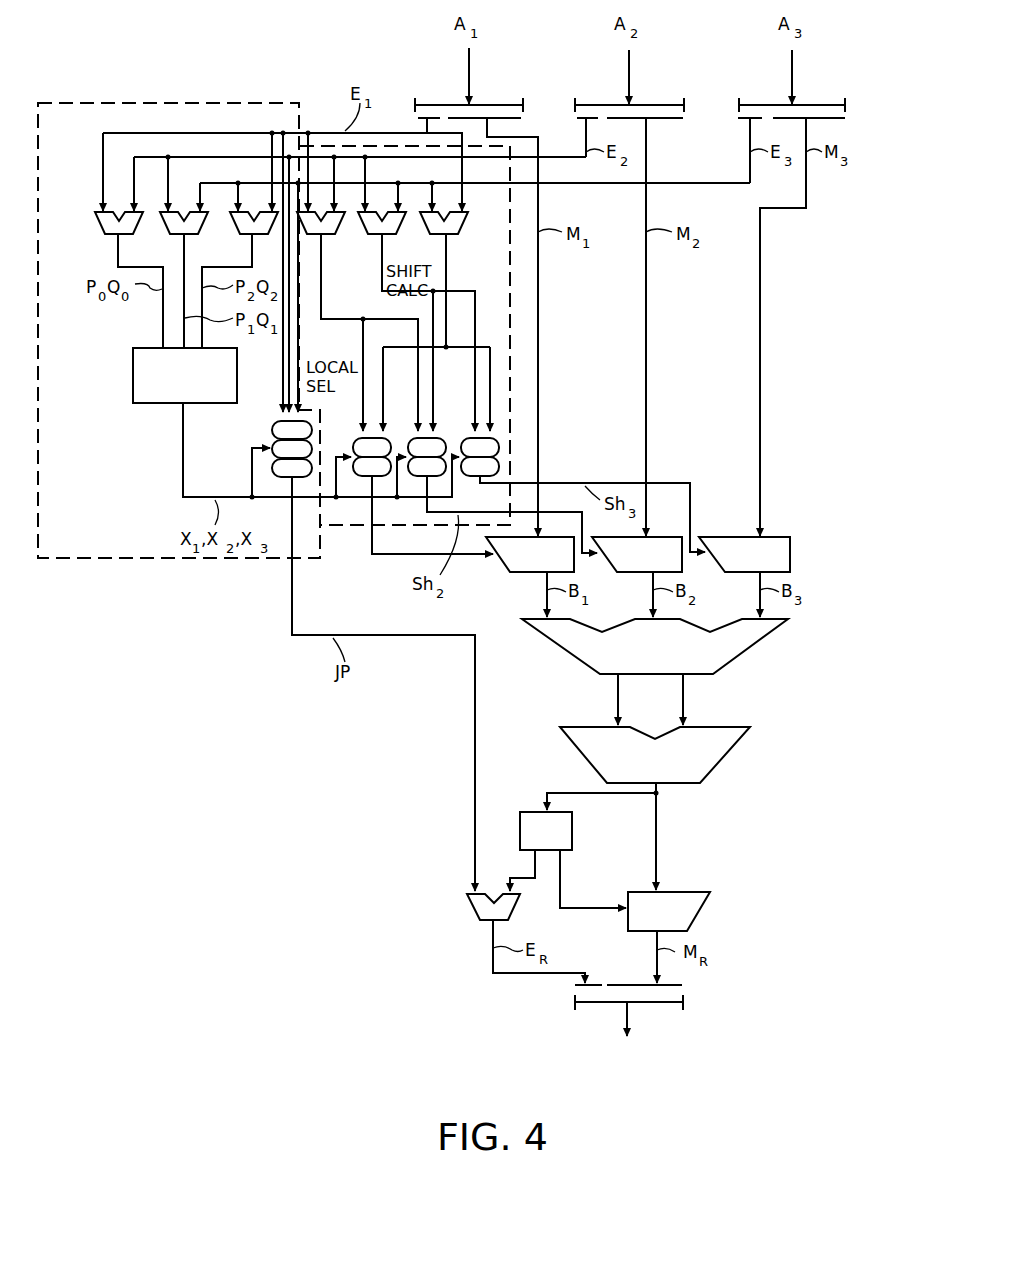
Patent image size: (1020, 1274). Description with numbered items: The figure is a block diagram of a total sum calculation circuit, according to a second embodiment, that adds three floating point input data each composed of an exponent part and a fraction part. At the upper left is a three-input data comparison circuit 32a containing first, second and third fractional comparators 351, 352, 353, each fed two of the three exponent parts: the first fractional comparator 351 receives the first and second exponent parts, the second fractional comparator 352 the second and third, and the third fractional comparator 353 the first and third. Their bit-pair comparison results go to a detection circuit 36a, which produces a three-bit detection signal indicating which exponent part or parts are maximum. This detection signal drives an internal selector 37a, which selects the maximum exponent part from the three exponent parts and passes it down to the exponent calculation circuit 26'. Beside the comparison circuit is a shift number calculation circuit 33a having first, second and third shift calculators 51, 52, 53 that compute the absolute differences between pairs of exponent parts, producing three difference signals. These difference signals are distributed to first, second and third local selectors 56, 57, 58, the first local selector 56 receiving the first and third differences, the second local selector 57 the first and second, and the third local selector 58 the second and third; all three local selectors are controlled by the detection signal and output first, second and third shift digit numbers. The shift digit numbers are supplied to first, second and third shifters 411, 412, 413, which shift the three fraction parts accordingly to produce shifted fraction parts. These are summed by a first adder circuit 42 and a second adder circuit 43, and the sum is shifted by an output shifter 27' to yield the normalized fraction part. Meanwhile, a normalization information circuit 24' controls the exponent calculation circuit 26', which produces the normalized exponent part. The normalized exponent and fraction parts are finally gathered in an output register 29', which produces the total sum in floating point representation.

The first fractional comparator 351 is at (102, 228).
The second fractional comparator 352 is at (167, 228).
The third fractional comparator 353 is at (236, 228).
The first shift calculator 51 is at (330, 236).
The second shift calculator 52 is at (395, 236).
The third shift calculator 53 is at (460, 236).
The detection circuit 36a is at (155, 405).
The internal selector 37a is at (272, 427).
The first local selector 56 is at (358, 436).
The second local selector 57 is at (413, 436).
The third local selector 58 is at (468, 436).
The three-input data comparison circuit 32a is at (90, 560).
The shift number calculation circuit 33a is at (510, 335).
The first shifter 411 is at (551, 535).
The second shifter 412 is at (661, 535).
The third shifter 413 is at (766, 535).
The first adder circuit 42 is at (752, 645).
The second adder circuit 43 is at (728, 752).
The normalization information circuit 24' is at (469, 858).
The exponent calculation circuit 26' is at (470, 960).
The output shifter 27' is at (741, 937).
The output register 29' is at (669, 1025).